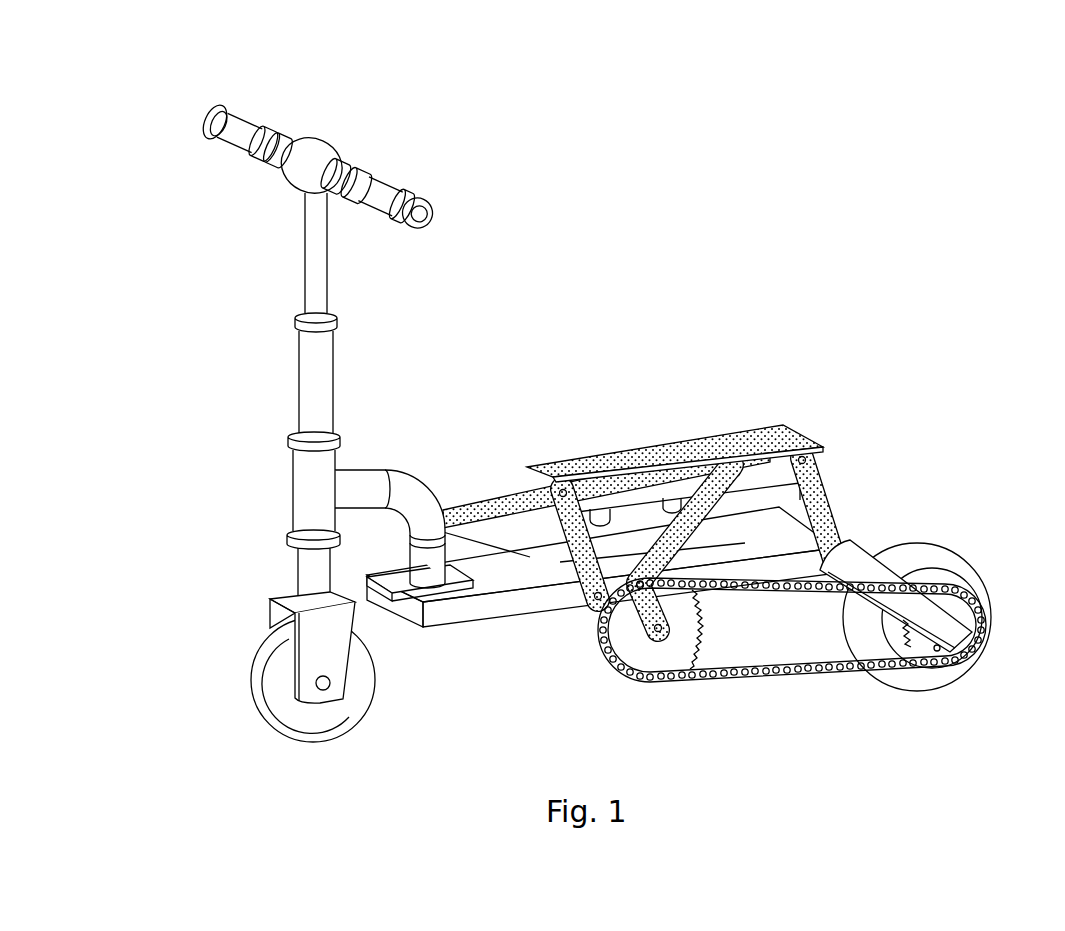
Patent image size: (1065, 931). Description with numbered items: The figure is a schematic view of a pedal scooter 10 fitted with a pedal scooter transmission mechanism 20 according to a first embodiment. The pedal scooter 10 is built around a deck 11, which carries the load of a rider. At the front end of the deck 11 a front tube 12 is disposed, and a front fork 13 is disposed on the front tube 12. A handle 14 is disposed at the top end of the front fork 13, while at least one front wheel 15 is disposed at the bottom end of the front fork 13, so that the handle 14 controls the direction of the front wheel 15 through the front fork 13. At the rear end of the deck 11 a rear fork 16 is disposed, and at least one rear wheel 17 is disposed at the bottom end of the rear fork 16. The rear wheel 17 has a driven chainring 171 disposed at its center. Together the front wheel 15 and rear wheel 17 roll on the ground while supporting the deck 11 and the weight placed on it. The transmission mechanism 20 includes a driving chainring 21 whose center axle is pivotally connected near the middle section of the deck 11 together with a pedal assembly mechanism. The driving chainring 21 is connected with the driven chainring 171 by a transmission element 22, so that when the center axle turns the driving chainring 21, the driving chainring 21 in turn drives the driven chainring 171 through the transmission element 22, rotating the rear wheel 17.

The pedal scooter 10 is at (158, 100).
The deck 11 is at (490, 607).
The front tube 12 is at (325, 462).
The front fork 13 is at (277, 302).
The handle 14 is at (380, 197).
The front wheel 15 is at (360, 681).
The rear fork 16 is at (883, 578).
The rear wheel 17 is at (968, 588).
The driven chainring 171 is at (937, 648).
The transmission mechanism 20 is at (823, 435).
The driving chainring 21 is at (650, 667).
The transmission element 22 is at (764, 680).